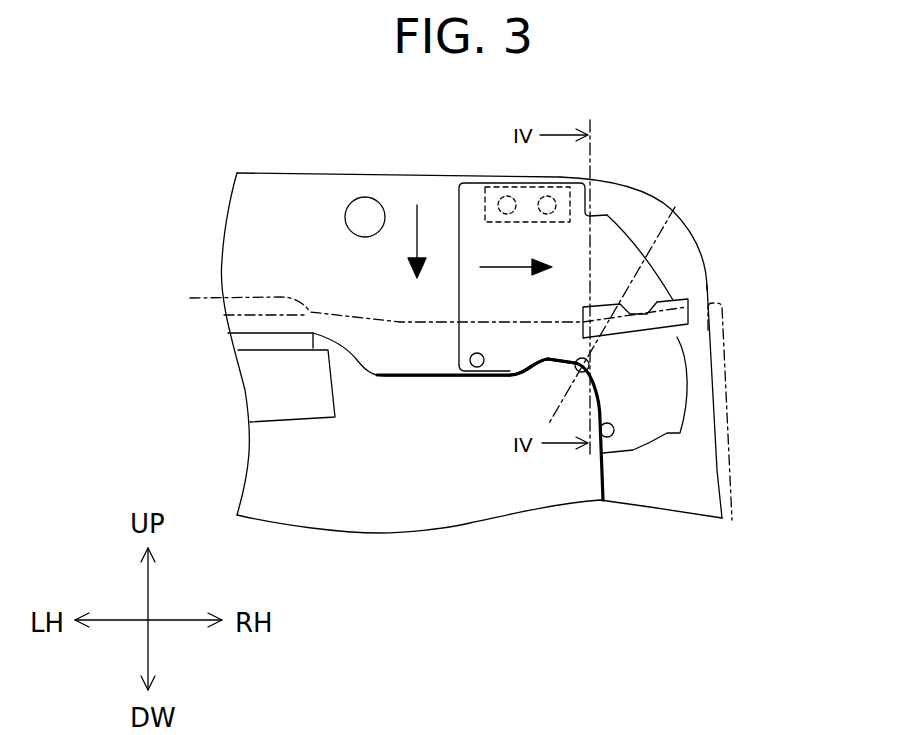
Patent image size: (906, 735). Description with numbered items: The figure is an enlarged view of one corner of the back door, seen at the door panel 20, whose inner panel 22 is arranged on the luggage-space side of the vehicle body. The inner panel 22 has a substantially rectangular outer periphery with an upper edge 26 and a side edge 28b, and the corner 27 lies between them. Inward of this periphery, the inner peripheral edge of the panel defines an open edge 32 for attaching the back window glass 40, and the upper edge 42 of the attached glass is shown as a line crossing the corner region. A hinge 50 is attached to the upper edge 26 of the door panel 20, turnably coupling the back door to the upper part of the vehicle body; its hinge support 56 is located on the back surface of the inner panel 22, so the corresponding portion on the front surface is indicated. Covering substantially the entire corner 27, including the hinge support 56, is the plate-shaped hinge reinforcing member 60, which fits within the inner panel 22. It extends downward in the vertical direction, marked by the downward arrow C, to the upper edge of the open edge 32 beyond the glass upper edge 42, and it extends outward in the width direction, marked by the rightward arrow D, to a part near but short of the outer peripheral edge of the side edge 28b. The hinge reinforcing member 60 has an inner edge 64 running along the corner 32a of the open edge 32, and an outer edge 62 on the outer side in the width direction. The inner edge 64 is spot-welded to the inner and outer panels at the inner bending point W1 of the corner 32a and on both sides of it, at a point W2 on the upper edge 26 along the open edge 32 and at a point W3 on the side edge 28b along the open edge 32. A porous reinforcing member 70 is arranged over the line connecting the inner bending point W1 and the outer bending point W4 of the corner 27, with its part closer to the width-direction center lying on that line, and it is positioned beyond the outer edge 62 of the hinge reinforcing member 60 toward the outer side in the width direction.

The door panel 20 is at (500, 286).
The inner panel 22 is at (658, 123).
The upper edge 26 is at (283, 197).
The corner 27 is at (660, 210).
The side edge 28b is at (698, 470).
The open edge 32 is at (602, 466).
The corner of the open edge 32a is at (557, 373).
The back window glass 40 is at (727, 417).
The upper edge of the back window glass 42 is at (422, 302).
The hinge 50 is at (507, 228).
The hinge support 56 is at (485, 205).
The hinge reinforcing member 60 is at (647, 260).
The outer edge 62 is at (685, 363).
The inner edge 64 is at (477, 368).
The porous reinforcing member 70 is at (688, 300).
The inner bending point W1 is at (578, 363).
The spot welding point on the upper edge W2 is at (468, 374).
The spot welding point on the side edge W3 is at (612, 432).
The outer bending point W4 is at (673, 213).
The downward arrow C is at (415, 247).
The rightward arrow D is at (505, 270).